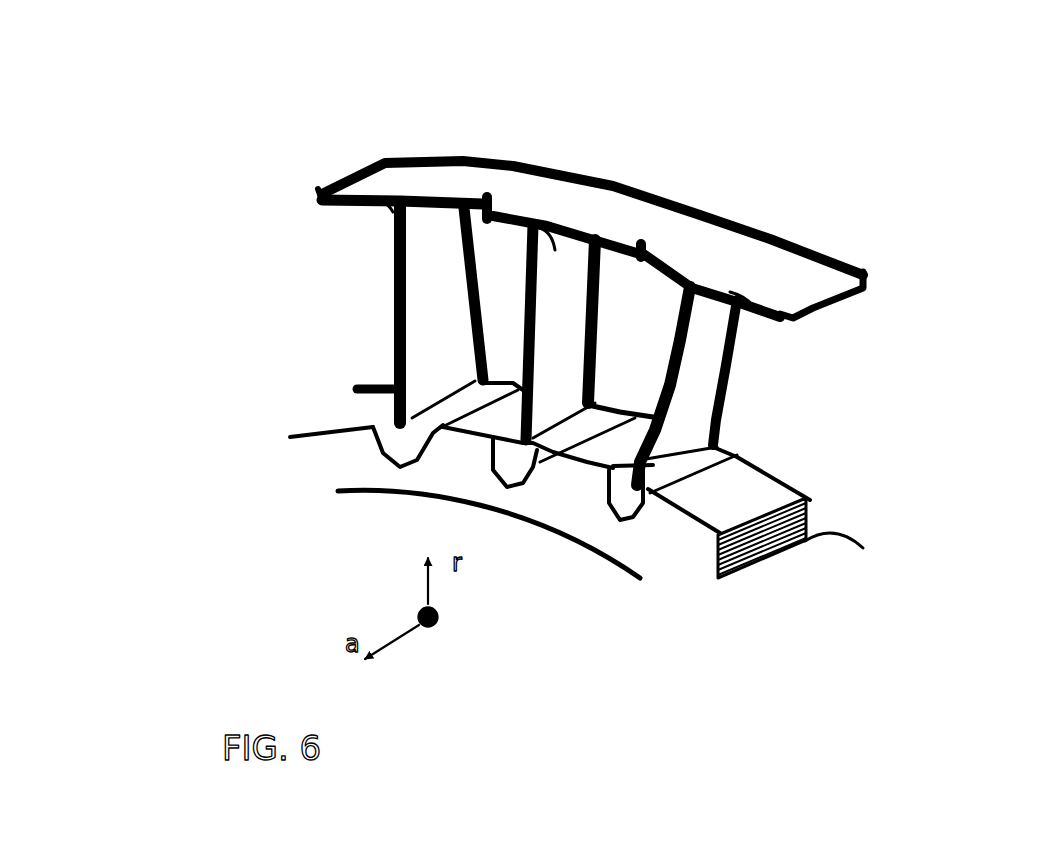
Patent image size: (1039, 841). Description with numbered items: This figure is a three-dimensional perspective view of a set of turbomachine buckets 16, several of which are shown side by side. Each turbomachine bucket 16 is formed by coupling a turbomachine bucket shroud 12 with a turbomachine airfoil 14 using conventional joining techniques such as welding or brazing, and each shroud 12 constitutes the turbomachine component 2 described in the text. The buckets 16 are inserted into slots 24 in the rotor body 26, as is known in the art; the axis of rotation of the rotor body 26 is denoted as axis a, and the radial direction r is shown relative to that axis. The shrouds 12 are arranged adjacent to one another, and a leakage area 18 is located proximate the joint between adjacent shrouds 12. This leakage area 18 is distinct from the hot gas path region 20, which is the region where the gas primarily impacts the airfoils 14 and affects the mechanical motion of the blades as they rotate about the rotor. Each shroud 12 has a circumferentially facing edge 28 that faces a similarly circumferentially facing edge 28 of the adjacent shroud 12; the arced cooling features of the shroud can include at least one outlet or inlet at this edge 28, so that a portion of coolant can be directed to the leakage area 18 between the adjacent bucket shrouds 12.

The turbomachine component 2 is at (551, 244).
The turbomachine bucket shroud 12 is at (415, 180).
The turbomachine airfoil 14 is at (595, 350).
The turbomachine bucket 16 is at (300, 152).
The leakage area 18 is at (495, 224).
The hot gas path region 20 is at (568, 334).
The slot 24 is at (370, 449).
The rotor body 26 is at (600, 532).
The circumferentially facing edge 28 is at (500, 178).